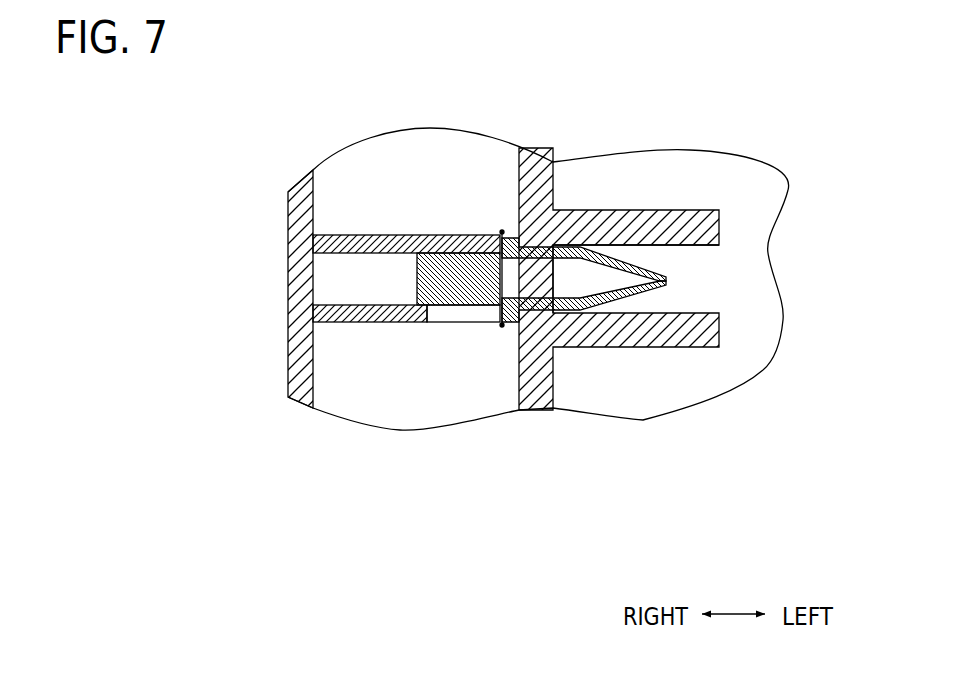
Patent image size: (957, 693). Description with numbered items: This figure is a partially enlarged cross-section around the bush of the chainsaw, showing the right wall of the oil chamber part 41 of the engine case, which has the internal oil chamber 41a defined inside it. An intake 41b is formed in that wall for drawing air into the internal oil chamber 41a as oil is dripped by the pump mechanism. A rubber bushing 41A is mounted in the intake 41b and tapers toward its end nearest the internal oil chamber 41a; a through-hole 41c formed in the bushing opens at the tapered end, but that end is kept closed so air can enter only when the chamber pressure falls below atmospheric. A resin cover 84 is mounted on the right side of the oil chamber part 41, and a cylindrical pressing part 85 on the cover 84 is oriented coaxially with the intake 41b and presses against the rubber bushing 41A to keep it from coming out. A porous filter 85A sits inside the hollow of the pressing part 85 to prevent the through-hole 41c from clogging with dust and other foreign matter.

The oil chamber part 41 is at (532, 402).
The internal oil chamber 41a is at (742, 357).
The intake 41b is at (683, 246).
The through-hole 41c is at (573, 287).
The rubber bushing 41A is at (543, 313).
The cover 84 is at (297, 352).
The pressing part 85 is at (360, 322).
The porous filter 85A is at (458, 306).